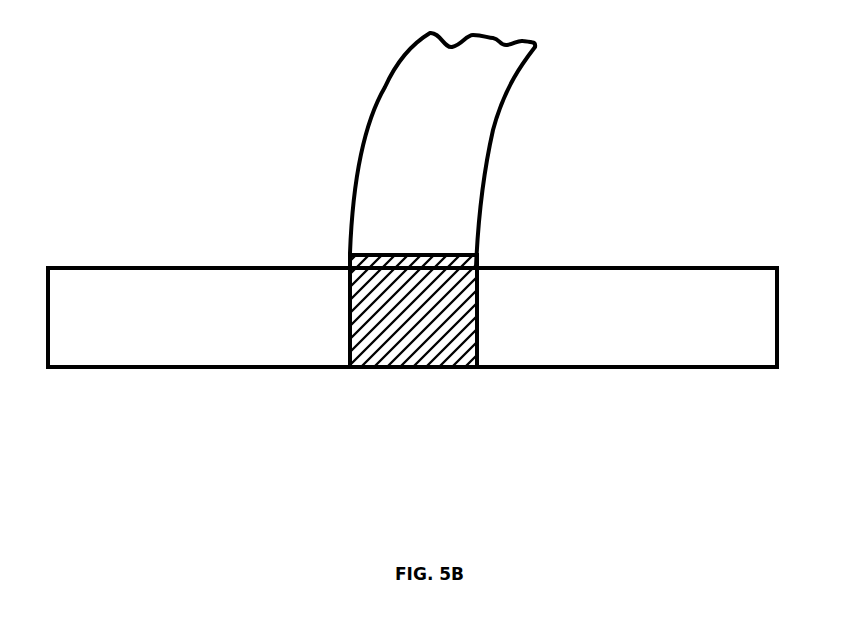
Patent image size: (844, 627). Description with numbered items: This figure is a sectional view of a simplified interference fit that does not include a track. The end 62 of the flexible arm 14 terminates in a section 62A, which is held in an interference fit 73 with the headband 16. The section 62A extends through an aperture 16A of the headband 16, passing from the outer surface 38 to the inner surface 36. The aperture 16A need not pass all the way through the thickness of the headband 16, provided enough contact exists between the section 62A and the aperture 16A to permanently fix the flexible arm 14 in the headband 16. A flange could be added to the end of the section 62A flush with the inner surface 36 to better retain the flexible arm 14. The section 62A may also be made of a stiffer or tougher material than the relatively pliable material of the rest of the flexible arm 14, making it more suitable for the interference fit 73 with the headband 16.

The flexible arm 14 is at (445, 140).
The headband 16 is at (187, 336).
The aperture 16A is at (477, 327).
The inner surface 36 is at (193, 373).
The outer surface 38 is at (118, 267).
The end of flexible arm 62 is at (408, 223).
The section 62A is at (348, 267).
The interference fit 73 is at (487, 377).